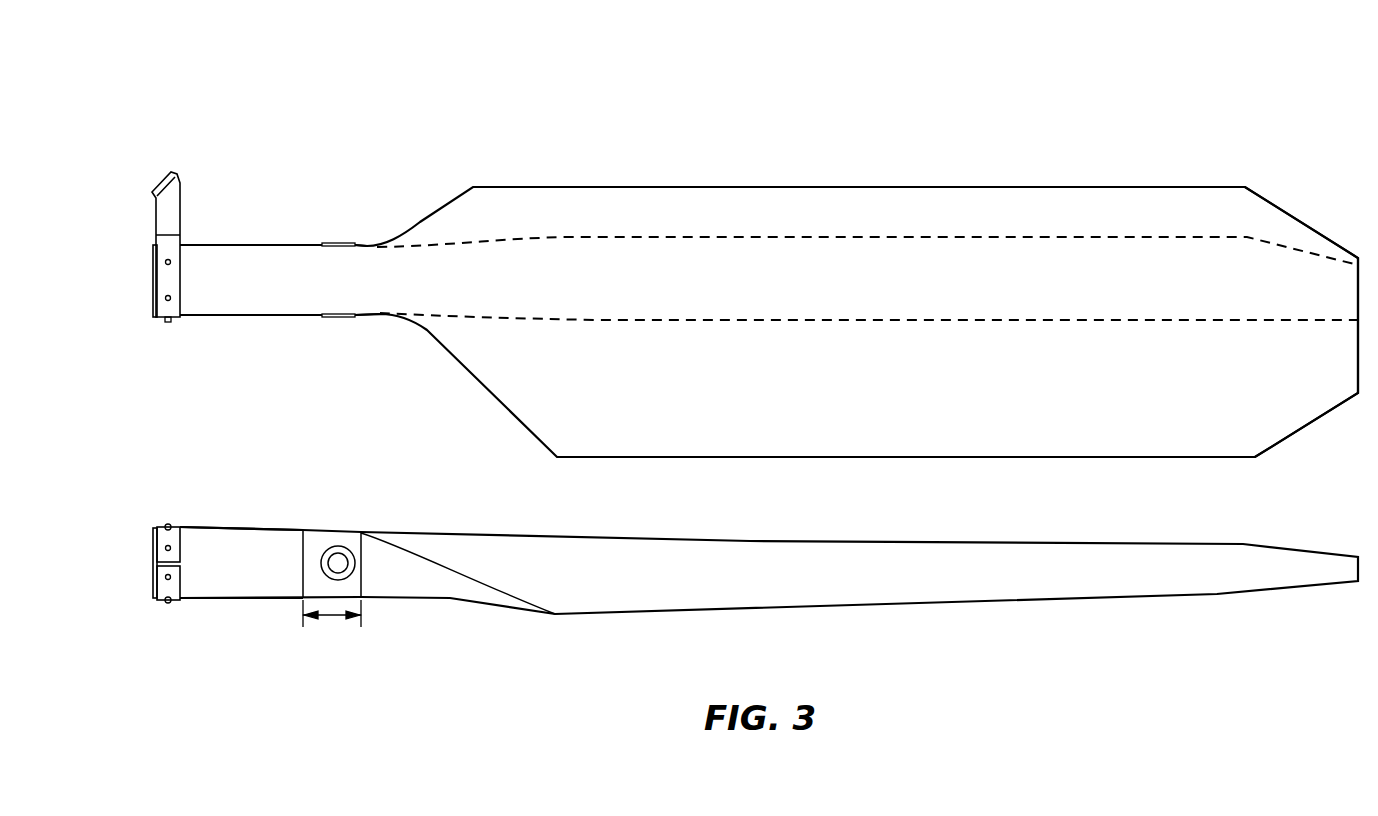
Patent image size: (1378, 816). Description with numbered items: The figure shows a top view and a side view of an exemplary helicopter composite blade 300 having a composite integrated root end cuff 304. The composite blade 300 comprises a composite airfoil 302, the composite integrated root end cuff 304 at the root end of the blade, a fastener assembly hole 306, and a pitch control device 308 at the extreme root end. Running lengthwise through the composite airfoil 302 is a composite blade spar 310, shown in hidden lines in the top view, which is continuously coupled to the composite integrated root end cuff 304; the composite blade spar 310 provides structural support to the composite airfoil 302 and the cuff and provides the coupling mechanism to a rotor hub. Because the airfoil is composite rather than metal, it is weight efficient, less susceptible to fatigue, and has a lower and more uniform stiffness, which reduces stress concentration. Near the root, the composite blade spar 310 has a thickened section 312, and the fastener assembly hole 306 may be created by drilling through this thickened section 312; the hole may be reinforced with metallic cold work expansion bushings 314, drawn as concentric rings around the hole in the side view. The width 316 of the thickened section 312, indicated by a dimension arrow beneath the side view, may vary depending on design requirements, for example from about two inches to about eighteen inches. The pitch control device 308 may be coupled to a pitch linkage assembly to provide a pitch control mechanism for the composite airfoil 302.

The composite blade 300 is at (292, 78).
The composite airfoil 302 is at (1187, 187).
The composite integrated root end cuff 304 is at (205, 257).
The fastener assembly hole 306 is at (337, 553).
The pitch control device 308 is at (157, 215).
The composite blade spar 310 is at (947, 237).
The thickened section 312 is at (348, 255).
The metallic cold work expansion bushings 314 is at (343, 548).
The width 316 is at (333, 617).